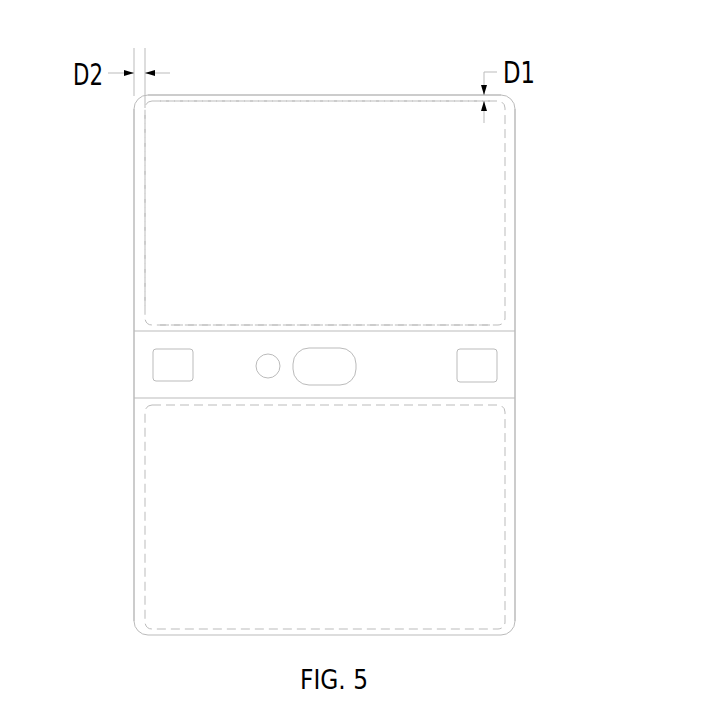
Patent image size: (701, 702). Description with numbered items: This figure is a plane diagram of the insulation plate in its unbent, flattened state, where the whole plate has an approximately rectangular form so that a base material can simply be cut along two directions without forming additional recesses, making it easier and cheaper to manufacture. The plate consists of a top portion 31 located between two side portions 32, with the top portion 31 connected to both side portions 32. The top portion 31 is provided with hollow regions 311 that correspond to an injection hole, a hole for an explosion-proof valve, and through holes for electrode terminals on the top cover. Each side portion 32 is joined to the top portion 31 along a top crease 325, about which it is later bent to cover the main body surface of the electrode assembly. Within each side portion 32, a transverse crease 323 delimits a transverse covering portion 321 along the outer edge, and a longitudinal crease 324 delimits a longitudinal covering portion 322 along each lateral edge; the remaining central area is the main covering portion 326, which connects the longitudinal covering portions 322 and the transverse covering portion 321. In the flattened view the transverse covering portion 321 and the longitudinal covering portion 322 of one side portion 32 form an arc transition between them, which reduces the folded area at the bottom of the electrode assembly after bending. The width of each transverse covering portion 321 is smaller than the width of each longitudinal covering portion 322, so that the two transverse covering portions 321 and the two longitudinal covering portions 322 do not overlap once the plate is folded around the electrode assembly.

The side portion 32 is at (532, 272).
The top portion 31 is at (498, 343).
The hollow region 311 is at (487, 373).
The transverse covering portion 321 is at (402, 98).
The longitudinal covering portion 322 is at (143, 167).
The transverse crease 323 is at (322, 100).
The longitudinal crease 324 is at (145, 238).
The top crease 325 is at (213, 325).
The main covering portion 326 is at (392, 230).